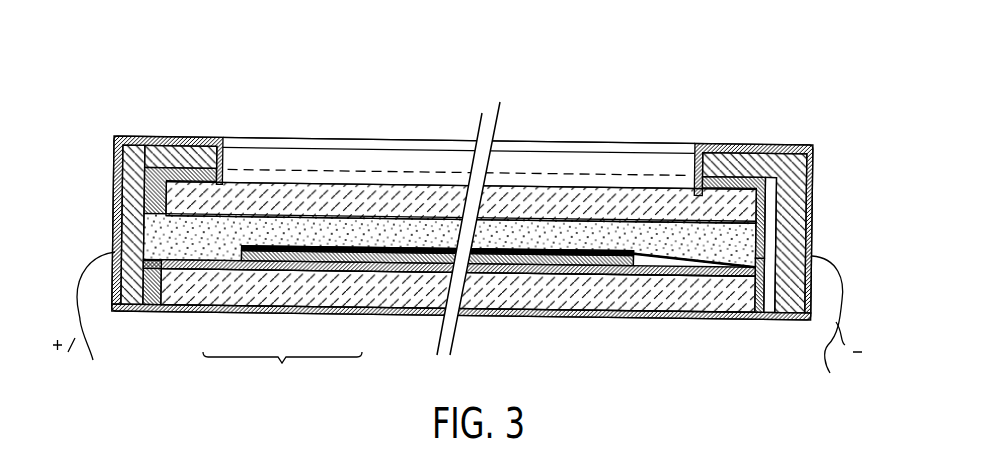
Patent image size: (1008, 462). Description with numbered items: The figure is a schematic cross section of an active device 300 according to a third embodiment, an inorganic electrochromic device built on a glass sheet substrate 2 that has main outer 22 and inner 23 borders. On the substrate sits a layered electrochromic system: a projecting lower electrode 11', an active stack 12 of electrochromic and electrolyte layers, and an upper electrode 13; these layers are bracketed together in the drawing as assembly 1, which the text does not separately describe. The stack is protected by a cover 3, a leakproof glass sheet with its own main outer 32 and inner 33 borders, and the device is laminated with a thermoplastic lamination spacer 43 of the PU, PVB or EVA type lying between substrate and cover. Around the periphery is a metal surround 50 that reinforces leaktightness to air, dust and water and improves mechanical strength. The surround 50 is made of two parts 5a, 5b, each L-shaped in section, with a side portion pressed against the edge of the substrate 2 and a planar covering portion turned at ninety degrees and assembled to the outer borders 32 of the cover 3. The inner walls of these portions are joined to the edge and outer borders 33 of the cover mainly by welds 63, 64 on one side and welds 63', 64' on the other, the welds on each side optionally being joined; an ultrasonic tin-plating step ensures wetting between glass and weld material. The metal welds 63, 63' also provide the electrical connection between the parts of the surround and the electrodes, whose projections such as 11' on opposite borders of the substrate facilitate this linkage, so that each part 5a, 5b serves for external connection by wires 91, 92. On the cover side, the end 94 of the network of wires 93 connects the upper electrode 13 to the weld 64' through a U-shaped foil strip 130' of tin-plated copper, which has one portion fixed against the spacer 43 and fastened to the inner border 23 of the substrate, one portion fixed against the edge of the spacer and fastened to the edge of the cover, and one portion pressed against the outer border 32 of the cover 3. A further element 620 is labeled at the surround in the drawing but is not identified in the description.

The active device 300 is at (344, 113).
The metal surround 50 is at (141, 137).
The outer insulating coating 620 is at (115, 185).
The first part of the surround 5a is at (186, 150).
The second part of the surround 5b is at (773, 153).
The weld 64 is at (193, 141).
The weld 64' is at (733, 166).
The U-shaped foil strip 130' is at (815, 244).
The weld 63 is at (149, 309).
The weld 63' is at (776, 311).
The protective cover 3 is at (525, 195).
The main outer border of the cover 32 is at (568, 180).
The inner border of the cover 33 is at (632, 215).
The lamination spacer 43 is at (408, 228).
The projecting lower electrode 11' is at (471, 302).
The active stack 12 is at (288, 262).
The upper electrode 13 is at (362, 260).
The negative electrode 1 is at (282, 375).
The glass sheet substrate 2 is at (482, 293).
The main outer border of the substrate 22 is at (536, 317).
The inner border of the substrate 23 is at (613, 277).
The end of the network of wires 94 is at (713, 277).
The network of wires 93 is at (655, 250).
The wire 91 is at (87, 321).
The wire 92 is at (837, 327).